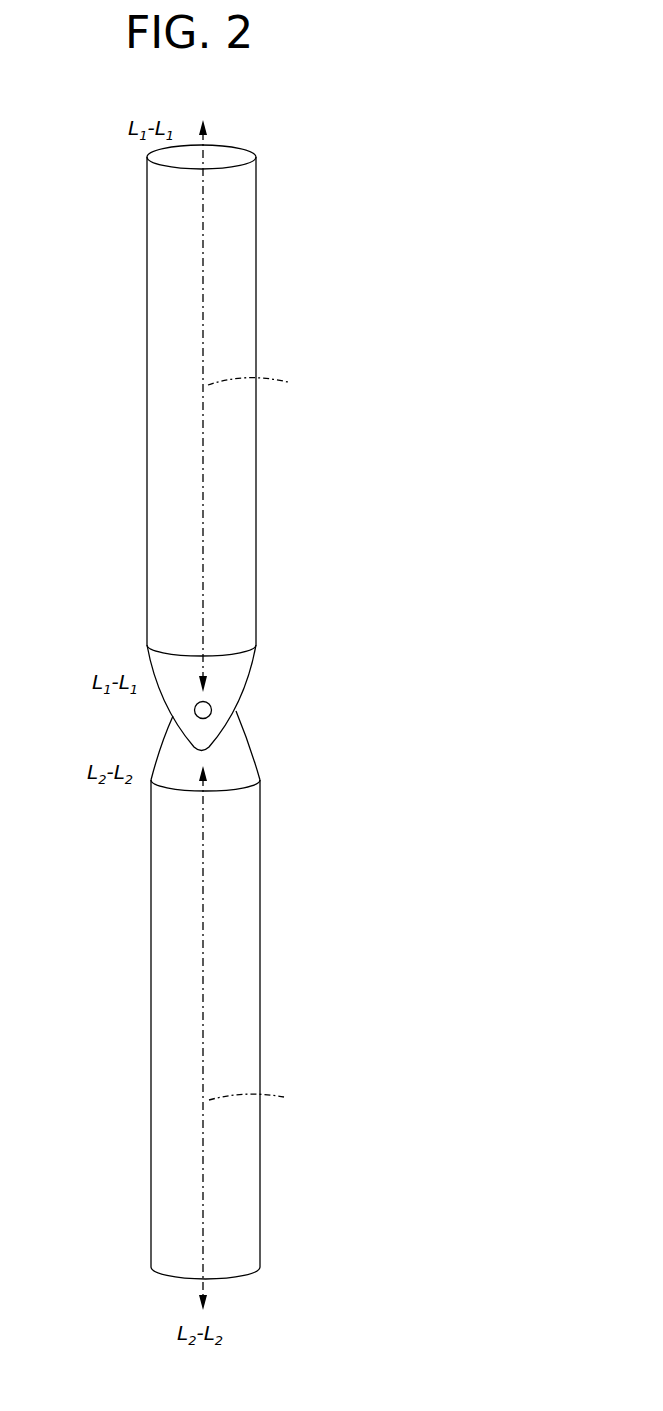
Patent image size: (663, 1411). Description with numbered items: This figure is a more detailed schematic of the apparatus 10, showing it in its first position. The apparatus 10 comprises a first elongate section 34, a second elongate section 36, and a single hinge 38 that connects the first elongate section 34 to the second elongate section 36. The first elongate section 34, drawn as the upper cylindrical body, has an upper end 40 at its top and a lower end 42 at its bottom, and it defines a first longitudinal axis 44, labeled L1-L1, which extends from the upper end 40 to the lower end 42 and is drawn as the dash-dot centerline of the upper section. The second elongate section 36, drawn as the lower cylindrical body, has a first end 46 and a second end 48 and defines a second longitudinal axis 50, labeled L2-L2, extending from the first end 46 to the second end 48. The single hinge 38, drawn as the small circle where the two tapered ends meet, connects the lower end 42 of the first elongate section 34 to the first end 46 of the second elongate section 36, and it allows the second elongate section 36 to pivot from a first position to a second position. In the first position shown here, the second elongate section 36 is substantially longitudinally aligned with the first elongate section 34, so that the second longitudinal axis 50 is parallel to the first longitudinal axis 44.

The apparatus 10 is at (436, 226).
The first elongate section 34 is at (256, 282).
The second elongate section 36 is at (261, 1040).
The single hinge 38 is at (212, 707).
The upper end 40 is at (147, 258).
The lower end 42 is at (147, 637).
The first longitudinal axis 44 is at (266, 384).
The first end 46 is at (261, 848).
The second end 48 is at (261, 1231).
The second longitudinal axis 50 is at (267, 1104).